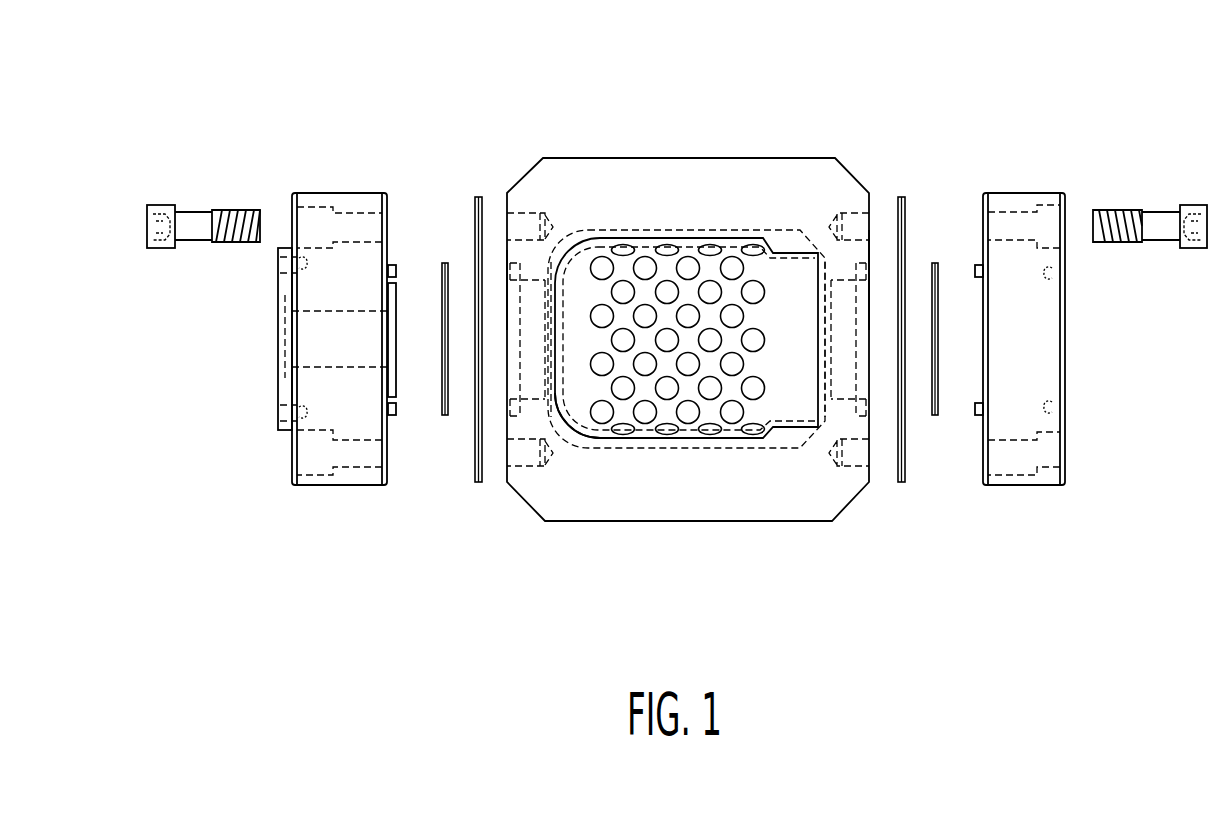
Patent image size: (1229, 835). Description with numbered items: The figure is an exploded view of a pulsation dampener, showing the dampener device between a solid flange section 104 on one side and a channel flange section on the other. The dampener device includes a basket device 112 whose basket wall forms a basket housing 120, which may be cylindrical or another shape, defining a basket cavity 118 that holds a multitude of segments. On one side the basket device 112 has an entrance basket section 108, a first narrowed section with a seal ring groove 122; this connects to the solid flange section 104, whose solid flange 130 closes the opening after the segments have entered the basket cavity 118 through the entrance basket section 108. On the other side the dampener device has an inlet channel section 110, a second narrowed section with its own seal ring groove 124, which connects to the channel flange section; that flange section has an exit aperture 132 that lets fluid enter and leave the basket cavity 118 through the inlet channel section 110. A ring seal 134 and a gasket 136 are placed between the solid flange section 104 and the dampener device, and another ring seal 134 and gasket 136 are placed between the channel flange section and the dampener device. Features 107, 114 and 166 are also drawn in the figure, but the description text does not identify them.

The solid flange section 104 is at (1022, 468).
The perforated plate 107 is at (635, 158).
The entrance basket section 108 is at (843, 408).
The inlet channel section 110 is at (530, 290).
The basket device 112 is at (735, 228).
The central recess 114 is at (582, 277).
The basket cavity 118 is at (608, 418).
The basket housing 120 is at (573, 437).
The seal ring groove 122 is at (869, 272).
The seal ring groove 124 is at (508, 288).
The solid flange 130 is at (1067, 340).
The exit aperture 132 is at (278, 340).
The ring seal 134 is at (447, 415).
The gasket 136 is at (473, 468).
The pocket of first clamping block 166 is at (300, 462).